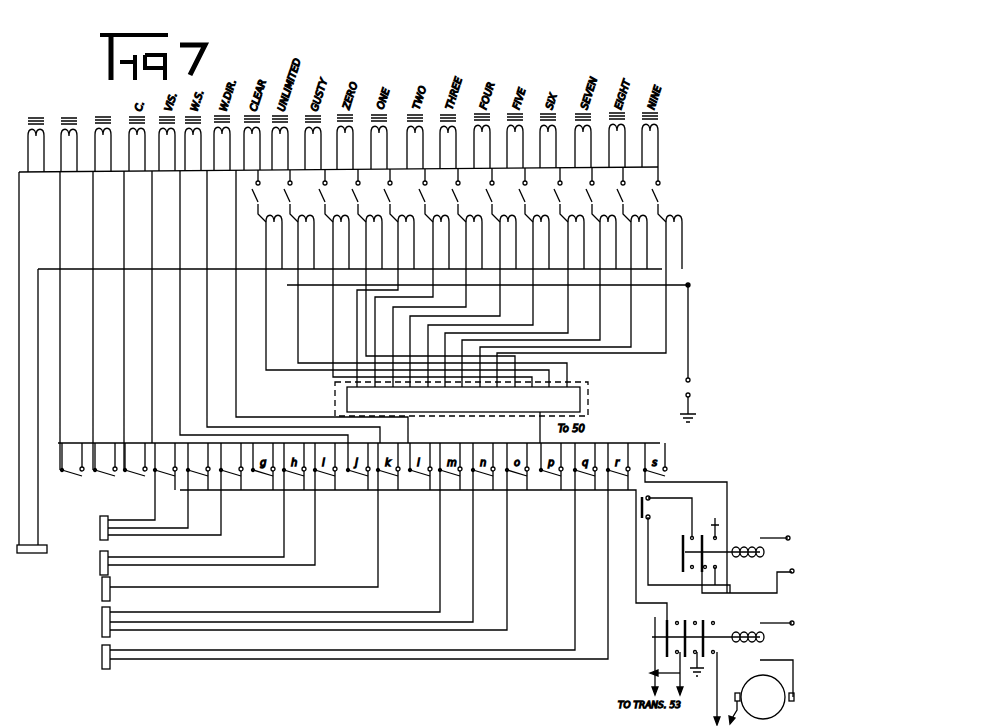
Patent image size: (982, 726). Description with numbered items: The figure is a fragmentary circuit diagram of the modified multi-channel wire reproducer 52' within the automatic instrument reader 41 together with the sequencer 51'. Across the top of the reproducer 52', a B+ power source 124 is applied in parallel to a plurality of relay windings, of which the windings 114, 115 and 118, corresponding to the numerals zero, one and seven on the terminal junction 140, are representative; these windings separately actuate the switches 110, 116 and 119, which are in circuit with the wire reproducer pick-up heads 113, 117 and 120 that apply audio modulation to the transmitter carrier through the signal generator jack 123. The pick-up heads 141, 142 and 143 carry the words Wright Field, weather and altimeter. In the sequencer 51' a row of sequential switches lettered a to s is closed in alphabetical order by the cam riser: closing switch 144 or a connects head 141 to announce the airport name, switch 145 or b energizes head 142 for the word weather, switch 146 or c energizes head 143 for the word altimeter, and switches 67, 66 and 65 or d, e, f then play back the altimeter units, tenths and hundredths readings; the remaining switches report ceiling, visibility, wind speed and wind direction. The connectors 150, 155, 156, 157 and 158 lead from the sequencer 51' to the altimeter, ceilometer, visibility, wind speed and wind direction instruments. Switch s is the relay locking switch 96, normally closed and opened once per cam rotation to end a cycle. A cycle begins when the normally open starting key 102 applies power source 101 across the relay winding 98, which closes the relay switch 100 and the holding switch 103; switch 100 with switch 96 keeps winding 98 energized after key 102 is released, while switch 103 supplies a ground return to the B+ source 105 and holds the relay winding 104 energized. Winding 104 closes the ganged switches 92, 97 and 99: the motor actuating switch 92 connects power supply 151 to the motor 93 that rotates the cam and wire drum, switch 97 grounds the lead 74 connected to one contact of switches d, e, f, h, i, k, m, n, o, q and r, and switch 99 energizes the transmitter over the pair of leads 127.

The wire reproducer pick up head 141 is at (38, 160).
The wire reproducer head 142 is at (70, 160).
The wire reproducer pick up head 143 is at (103, 160).
The wire reproducer pick up head 113 is at (334, 196).
The wire reproducer pick up head 117 is at (369, 195).
The switch 110 is at (352, 190).
The switch 116 is at (387, 190).
The relay winding 114 is at (382, 195).
The relay winding 115 is at (415, 195).
The wire reproducer pick up head 120 is at (574, 195).
The switch 119 is at (518, 292).
The relay winding 118 is at (543, 292).
The multichannel wire reproducer 52' is at (527, 330).
The B+ power source 124 is at (674, 394).
The terminal junction 140 is at (335, 403).
The sequential switch 144 is at (72, 476).
The sequential switch 145 is at (106, 476).
The sequential switch 146 is at (135, 478).
The sequential switch 67 is at (170, 478).
The sequential switch 66 is at (202, 478).
The sequential switch 65 is at (238, 478).
The lead 74 is at (556, 490).
The connector 150 is at (100, 525).
The connector 155 is at (99, 556).
The signal generator jack 123 is at (47, 549).
The connector 156 is at (102, 588).
The connector 157 is at (102, 624).
The connector 158 is at (102, 657).
The sequencer 51' is at (457, 678).
The automatic instrument reader 41 is at (714, 443).
The relay locking switch 96 is at (686, 480).
The cycle starting key 102 is at (651, 515).
The switch 103 is at (715, 518).
The relay switch 100 is at (683, 556).
The solenoid relay winding 98 is at (745, 547).
The power source 101 is at (777, 572).
The switch 97 is at (668, 620).
The motor actuating switch 92 is at (713, 620).
The switch 99 is at (652, 637).
The relay winding 104 is at (745, 630).
The B+ potential power source 105 is at (790, 632).
The transmission starting conductor 127 is at (649, 674).
The motor 93 is at (748, 684).
The power supply 151 is at (701, 689).